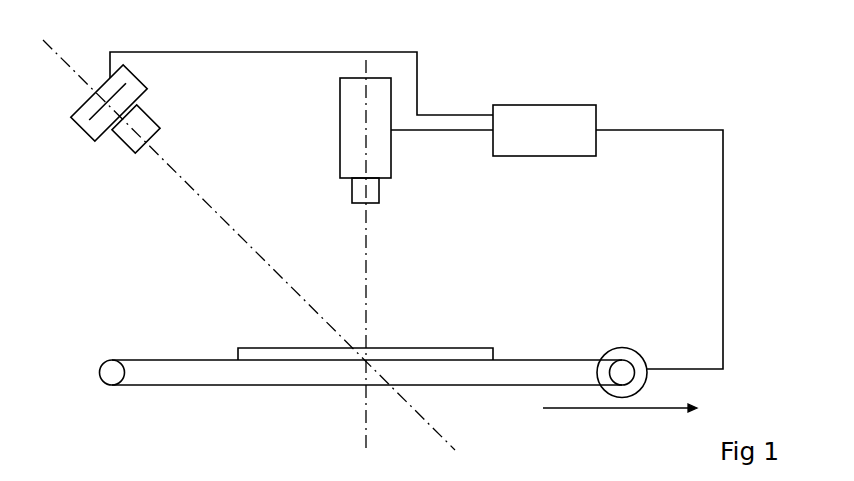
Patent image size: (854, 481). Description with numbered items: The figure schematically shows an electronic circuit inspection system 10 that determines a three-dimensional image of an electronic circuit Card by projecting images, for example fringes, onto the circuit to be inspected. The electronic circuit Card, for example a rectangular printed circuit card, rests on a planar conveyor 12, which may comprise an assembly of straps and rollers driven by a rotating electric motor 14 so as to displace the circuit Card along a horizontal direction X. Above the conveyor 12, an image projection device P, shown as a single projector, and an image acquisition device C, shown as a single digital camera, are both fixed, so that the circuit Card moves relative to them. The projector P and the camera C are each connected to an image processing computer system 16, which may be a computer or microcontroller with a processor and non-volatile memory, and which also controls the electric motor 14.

The electronic circuit inspection system 10 is at (675, 101).
The conveyor 12 is at (145, 363).
The rotating electric motor 14 is at (640, 351).
The image processing computer system 16 is at (597, 146).
The image projection device P is at (391, 168).
The image acquisition device C is at (124, 146).
The electronic circuit Card is at (440, 342).
The direction X is at (620, 418).